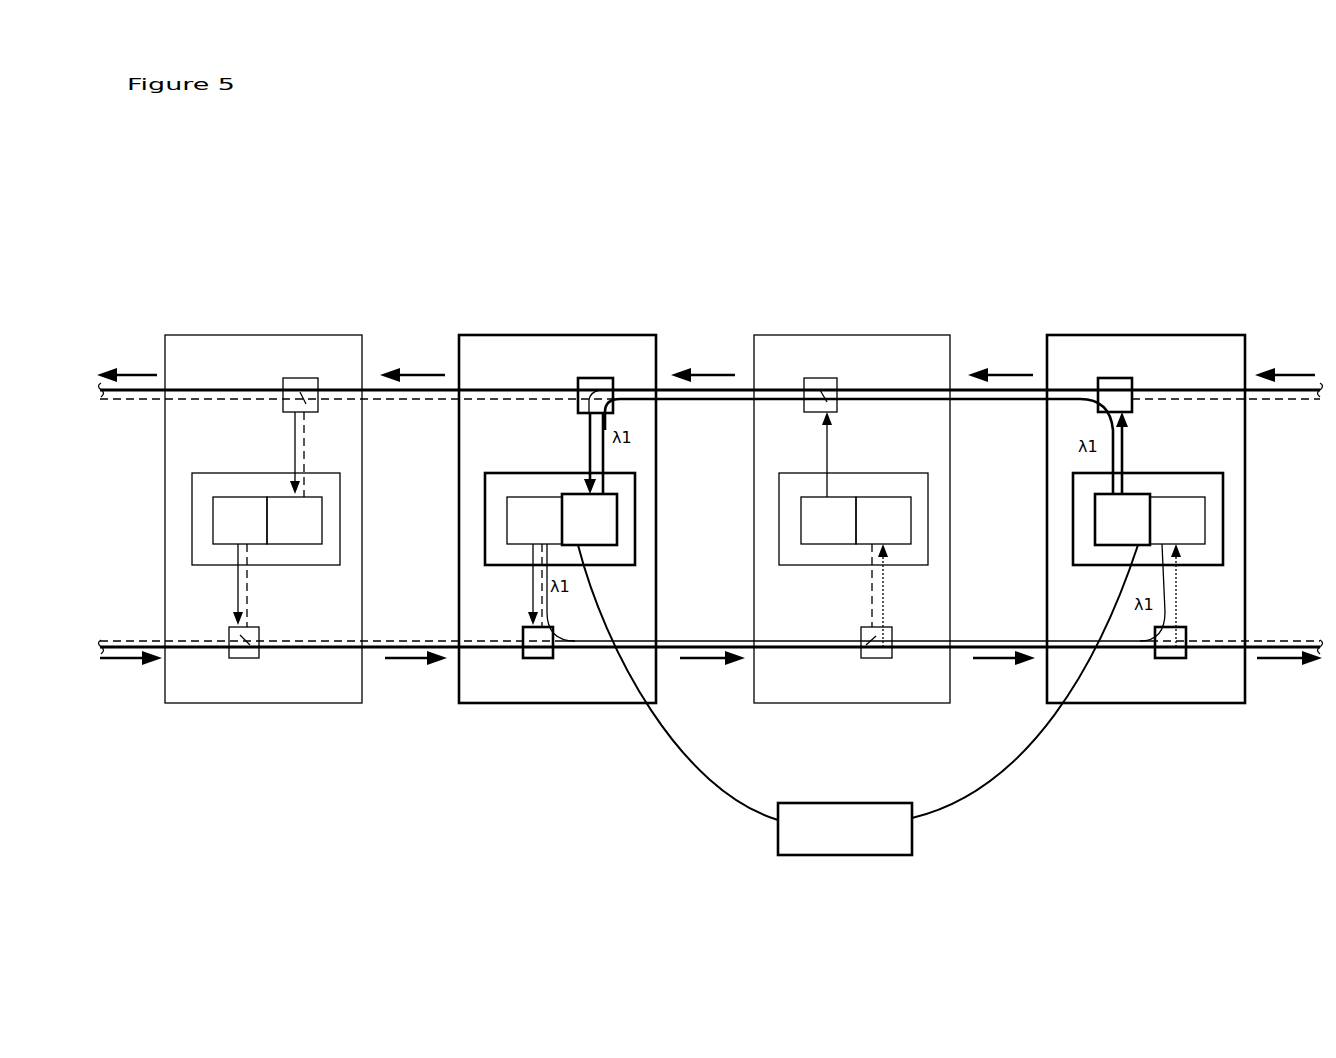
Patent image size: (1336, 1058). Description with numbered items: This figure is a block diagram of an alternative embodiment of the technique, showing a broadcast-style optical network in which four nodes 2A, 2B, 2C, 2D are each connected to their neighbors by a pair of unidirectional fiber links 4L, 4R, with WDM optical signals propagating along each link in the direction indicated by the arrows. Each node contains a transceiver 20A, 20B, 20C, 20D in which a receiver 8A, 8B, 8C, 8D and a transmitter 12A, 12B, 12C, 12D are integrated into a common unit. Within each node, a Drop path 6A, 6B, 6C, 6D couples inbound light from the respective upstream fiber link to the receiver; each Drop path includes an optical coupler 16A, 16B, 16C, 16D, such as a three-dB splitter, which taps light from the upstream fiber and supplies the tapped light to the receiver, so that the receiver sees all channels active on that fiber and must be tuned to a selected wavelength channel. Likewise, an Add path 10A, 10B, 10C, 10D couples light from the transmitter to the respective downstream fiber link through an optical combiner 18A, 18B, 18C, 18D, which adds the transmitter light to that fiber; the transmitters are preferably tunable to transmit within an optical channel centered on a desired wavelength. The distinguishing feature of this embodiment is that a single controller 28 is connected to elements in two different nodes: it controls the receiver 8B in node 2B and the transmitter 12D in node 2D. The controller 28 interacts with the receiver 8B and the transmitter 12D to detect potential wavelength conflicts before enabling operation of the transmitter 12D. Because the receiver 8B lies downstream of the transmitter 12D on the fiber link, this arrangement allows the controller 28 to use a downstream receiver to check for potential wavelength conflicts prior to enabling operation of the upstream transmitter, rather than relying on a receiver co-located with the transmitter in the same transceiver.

The node 2A is at (362, 335).
The node 2B is at (656, 335).
The node 2C is at (950, 335).
The node 2D is at (1245, 335).
The unidirectional fiber link 4L is at (1268, 399).
The unidirectional fiber link 4R is at (133, 647).
The Drop path 6A is at (295, 442).
The Drop path 6B is at (590, 445).
The Drop path 6C is at (885, 600).
The Drop path 6D is at (1180, 603).
The receiver 8A is at (297, 544).
The receiver 8B is at (600, 545).
The receiver 8C is at (895, 544).
The receiver 8D is at (1193, 544).
The Add path 10A is at (237, 585).
The Add path 10B is at (532, 585).
The Add path 10C is at (827, 460).
The Add path 10D is at (1128, 450).
The transmitter 12A is at (235, 497).
The transmitter 12B is at (519, 497).
The transmitter 12C is at (828, 544).
The transmitter 12D is at (1108, 545).
The optical coupler 16A is at (290, 378).
The optical coupler 16B is at (592, 378).
The optical coupler 16C is at (876, 658).
The optical coupler 16D is at (1172, 658).
The optical combiner 18A is at (240, 658).
The optical combiner 18B is at (535, 658).
The optical combiner 18C is at (817, 378).
The optical combiner 18D is at (1114, 378).
The transceiver 20A is at (340, 524).
The transceiver 20B is at (636, 525).
The transceiver 20C is at (879, 473).
The transceiver 20D is at (1186, 473).
The controller 28 is at (828, 855).